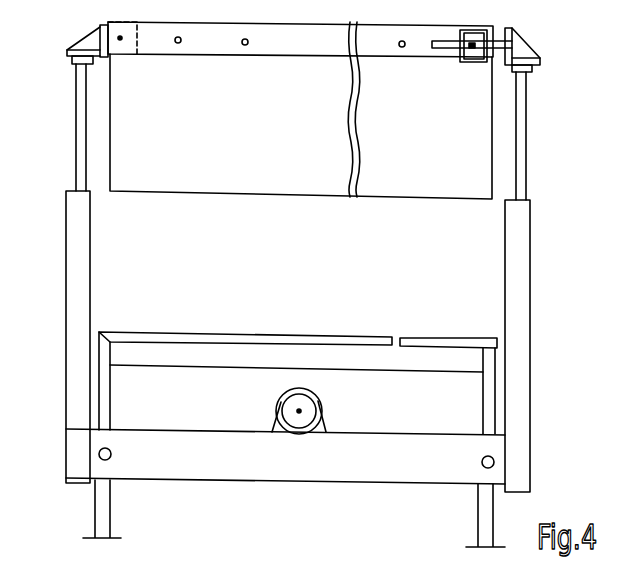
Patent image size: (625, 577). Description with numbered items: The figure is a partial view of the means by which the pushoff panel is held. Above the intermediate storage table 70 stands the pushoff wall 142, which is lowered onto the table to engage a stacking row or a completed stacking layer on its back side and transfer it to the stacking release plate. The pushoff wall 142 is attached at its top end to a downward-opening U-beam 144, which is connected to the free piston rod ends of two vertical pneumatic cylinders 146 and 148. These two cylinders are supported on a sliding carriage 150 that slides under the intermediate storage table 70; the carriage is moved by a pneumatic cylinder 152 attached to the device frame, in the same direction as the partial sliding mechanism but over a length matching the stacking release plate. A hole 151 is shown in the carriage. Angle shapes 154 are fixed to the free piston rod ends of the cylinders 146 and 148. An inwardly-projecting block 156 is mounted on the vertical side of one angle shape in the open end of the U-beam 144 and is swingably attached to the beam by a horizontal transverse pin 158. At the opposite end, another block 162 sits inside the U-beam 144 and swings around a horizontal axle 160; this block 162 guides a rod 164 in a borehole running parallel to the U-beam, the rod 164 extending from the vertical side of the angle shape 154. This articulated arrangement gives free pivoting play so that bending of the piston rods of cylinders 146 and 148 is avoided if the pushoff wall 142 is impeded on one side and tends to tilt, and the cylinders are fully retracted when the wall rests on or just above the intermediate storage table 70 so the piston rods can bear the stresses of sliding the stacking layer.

The intermediate storage table 70 is at (436, 338).
The pushoff wall 142 is at (285, 180).
The U-beam 144 is at (292, 46).
The pneumatic cylinder 146 is at (66, 245).
The pneumatic cylinder 148 is at (531, 207).
The sliding carriage 150 is at (196, 468).
The hole 151 is at (481, 467).
The pneumatic cylinder 152 is at (299, 422).
The angle shape 154 is at (102, 36).
The inwardly-projecting block 156 is at (109, 58).
The horizontal transverse pin 158 is at (122, 38).
The horizontal axle 160 is at (472, 49).
The block 162 is at (466, 53).
The rod 164 is at (436, 46).